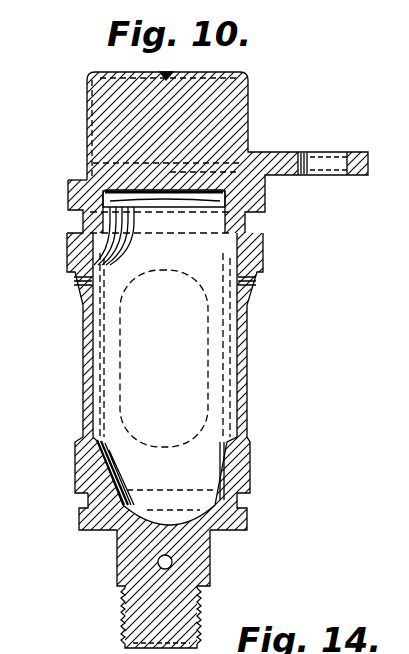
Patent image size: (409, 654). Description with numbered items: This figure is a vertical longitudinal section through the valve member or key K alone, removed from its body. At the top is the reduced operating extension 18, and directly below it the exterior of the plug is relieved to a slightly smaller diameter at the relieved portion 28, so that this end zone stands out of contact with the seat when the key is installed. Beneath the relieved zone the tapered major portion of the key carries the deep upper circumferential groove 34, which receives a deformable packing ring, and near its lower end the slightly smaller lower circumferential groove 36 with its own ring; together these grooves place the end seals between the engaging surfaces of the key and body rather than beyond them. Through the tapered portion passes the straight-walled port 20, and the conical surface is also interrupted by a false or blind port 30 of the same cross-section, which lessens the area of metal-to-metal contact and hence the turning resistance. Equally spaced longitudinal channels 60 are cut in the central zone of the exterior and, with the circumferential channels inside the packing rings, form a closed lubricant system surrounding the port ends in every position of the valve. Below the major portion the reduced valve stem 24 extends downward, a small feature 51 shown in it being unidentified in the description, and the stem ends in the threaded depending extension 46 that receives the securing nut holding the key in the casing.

The operating extension 18 is at (250, 86).
The valve assembly K is at (258, 137).
The relieved portion 28 is at (70, 188).
The upper circumferential groove 34 is at (250, 214).
The port 20 is at (86, 329).
The longitudinal channels 60 is at (98, 378).
The blind port 30 is at (205, 381).
The lower circumferential groove 36 is at (240, 503).
The valve stem 24 is at (205, 549).
The transverse hole 51 is at (158, 561).
The depending extension 46 is at (134, 607).